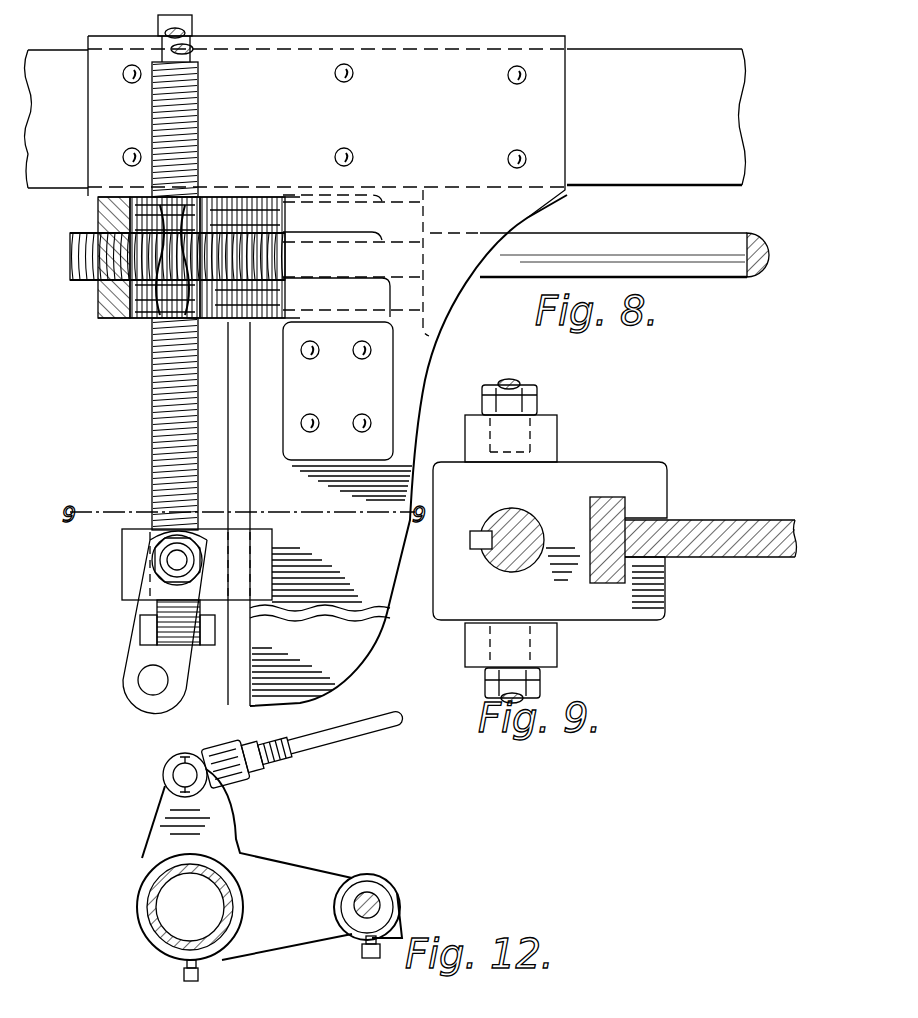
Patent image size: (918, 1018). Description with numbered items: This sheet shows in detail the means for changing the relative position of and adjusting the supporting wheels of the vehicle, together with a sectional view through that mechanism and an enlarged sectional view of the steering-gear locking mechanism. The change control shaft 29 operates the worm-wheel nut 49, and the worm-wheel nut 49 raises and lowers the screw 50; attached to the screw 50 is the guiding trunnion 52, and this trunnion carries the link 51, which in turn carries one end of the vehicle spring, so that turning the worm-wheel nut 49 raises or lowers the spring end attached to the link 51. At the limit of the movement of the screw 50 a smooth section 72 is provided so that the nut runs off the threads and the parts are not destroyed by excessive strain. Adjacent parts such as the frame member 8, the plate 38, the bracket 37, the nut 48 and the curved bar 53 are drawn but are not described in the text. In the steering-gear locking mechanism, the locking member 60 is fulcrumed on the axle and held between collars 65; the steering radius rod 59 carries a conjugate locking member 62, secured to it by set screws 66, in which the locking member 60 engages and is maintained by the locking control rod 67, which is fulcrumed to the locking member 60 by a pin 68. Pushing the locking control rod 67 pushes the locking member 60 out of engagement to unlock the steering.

In FIG. 8, the frame bar 8 is at (656, 117).
In FIG. 8, the change control shaft 29 is at (728, 250).
In FIG. 8, the bracket 37 is at (347, 411).
In FIG. 8, the plate 38 is at (62, 313).
In FIG. 8, the nut 48 is at (112, 320).
In FIG. 8, the worm-wheel nut 49 is at (138, 195).
In FIG. 8, the screw 50 is at (152, 401).
In FIG. 9, the screw 50 is at (525, 523).
In FIG. 8, the link 51 is at (138, 650).
In FIG. 9, the link 51 is at (535, 434).
In FIG. 8, the guiding trunnion 52 is at (128, 555).
In FIG. 9, the guiding trunnion 52 is at (649, 488).
In FIG. 8, the curved bar 53 is at (418, 352).
In FIG. 9, the curved bar 53 is at (673, 530).
In FIG. 12, the steering radius rod 59 is at (372, 900).
In FIG. 12, the locking member 60 is at (400, 924).
In FIG. 12, the conjugate locking member 62 is at (380, 902).
In FIG. 12, the collar 65 is at (150, 938).
In FIG. 12, the set screw 66 is at (182, 978).
In FIG. 12, the locking control rod 67 is at (360, 745).
In FIG. 12, the pin 68 is at (172, 780).
In FIG. 8, the smooth section 72 is at (165, 23).